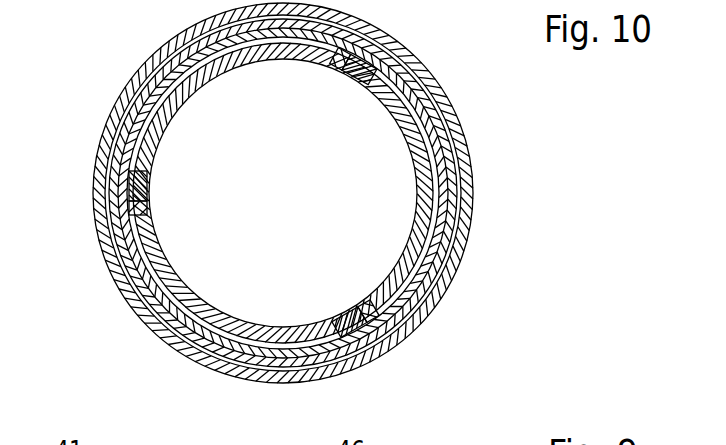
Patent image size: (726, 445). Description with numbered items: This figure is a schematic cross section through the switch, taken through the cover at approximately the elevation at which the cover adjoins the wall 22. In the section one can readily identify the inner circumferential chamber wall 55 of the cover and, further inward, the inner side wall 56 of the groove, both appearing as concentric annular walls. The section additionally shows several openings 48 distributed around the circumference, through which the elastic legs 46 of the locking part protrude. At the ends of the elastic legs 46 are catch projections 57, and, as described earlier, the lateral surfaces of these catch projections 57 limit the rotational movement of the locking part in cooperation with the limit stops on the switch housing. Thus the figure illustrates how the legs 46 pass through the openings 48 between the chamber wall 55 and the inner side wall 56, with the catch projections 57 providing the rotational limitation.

The wall 22 is at (466, 143).
The inner circumferential chamber wall 55 is at (450, 268).
The catch projections 57 is at (133, 190).
The inner side wall 56 is at (177, 278).
The openings 48 is at (148, 170).
The elastic legs 46 is at (148, 200).